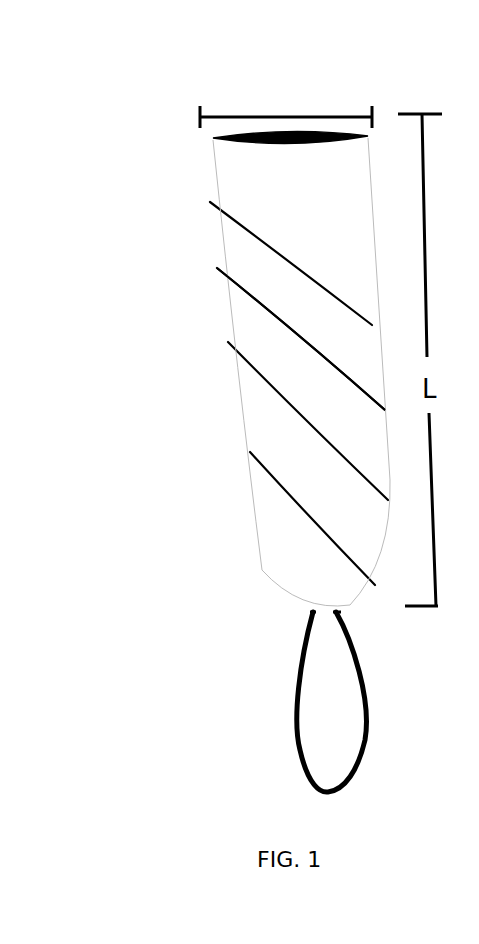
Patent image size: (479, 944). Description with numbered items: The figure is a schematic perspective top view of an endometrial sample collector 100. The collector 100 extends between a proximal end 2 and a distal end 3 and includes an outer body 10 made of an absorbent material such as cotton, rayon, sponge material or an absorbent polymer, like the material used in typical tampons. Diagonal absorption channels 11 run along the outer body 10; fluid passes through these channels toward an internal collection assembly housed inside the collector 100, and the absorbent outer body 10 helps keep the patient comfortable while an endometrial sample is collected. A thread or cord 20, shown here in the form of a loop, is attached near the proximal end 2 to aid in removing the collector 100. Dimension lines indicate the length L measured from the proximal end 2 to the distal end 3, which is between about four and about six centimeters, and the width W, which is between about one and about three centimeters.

The endometrial sample collector 100 is at (170, 296).
The outer body 10 is at (232, 445).
The absorption channels 11 is at (252, 372).
The proximal end 2 is at (228, 646).
The thread or cord 20 is at (266, 777).
The distal end 3 is at (222, 100).